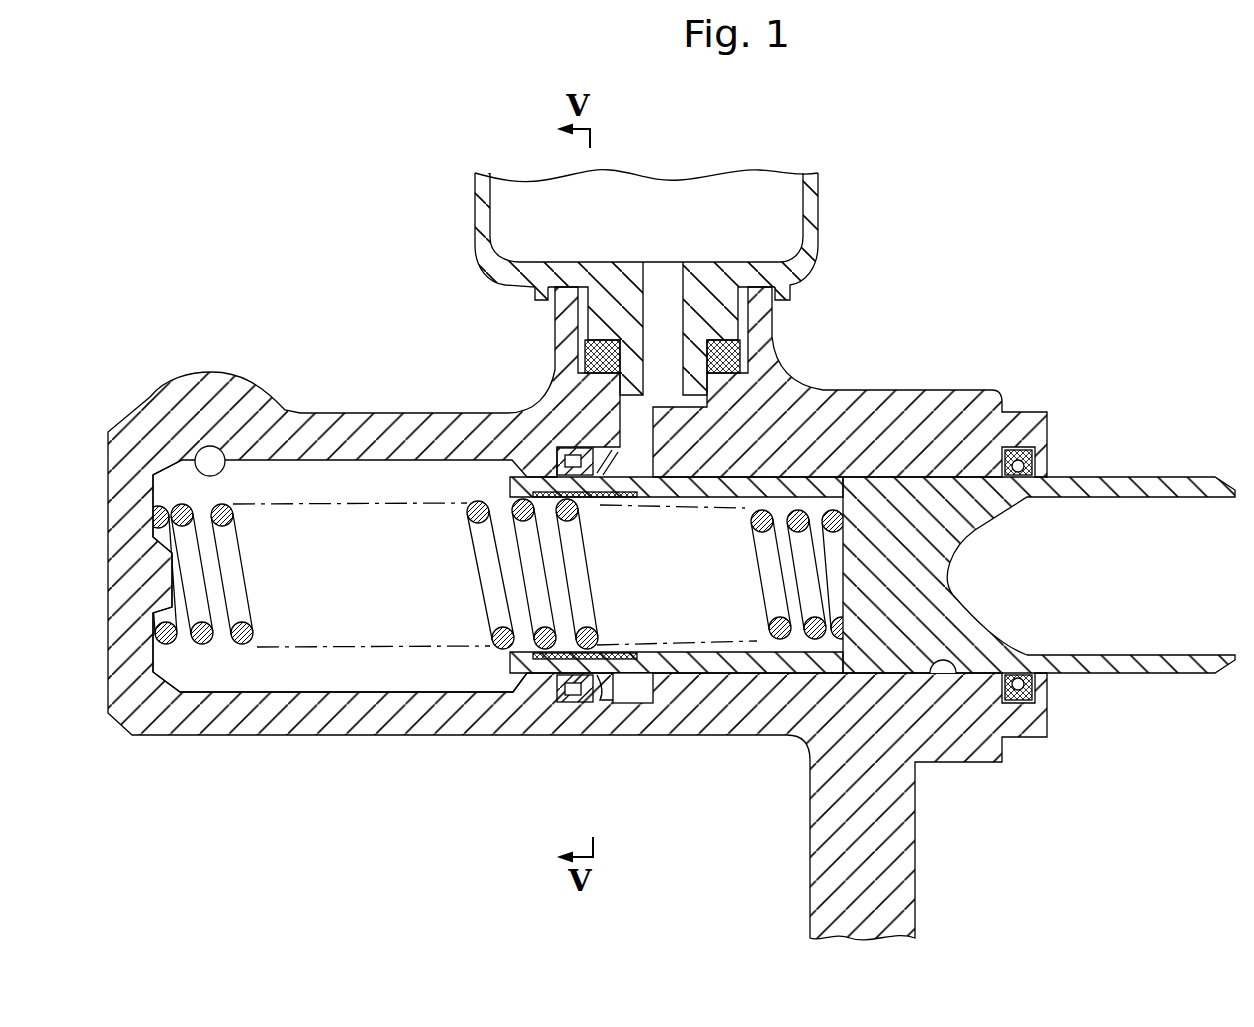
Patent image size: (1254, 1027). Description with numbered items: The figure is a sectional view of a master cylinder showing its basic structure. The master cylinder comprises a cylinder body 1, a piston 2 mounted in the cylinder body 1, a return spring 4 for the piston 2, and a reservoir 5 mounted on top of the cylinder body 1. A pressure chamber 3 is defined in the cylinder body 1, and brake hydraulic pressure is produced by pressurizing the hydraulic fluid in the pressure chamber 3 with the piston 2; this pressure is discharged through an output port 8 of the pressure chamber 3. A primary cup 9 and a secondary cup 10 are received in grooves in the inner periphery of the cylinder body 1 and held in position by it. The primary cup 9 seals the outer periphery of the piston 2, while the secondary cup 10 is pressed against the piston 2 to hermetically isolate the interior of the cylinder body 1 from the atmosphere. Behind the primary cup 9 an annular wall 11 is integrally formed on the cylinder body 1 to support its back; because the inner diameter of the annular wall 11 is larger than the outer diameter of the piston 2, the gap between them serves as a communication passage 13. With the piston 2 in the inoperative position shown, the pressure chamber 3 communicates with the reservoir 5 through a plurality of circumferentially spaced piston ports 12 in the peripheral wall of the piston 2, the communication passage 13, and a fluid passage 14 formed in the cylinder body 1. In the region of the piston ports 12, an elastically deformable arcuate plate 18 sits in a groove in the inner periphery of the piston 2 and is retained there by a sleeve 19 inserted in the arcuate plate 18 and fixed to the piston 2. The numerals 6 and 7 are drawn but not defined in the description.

The cylinder body 1 is at (898, 405).
The piston 2 is at (1142, 484).
The pressure chamber 3 is at (327, 668).
The return spring 4 is at (240, 644).
The reservoir 5 is at (482, 205).
The communication hole 6 is at (931, 675).
The valve body 7 is at (513, 670).
The output port 8 is at (207, 452).
The primary cup 9 is at (575, 704).
The secondary cup 10 is at (1035, 699).
The annular wall 11 is at (601, 692).
The piston ports 12 is at (548, 486).
The communication passage 13 is at (627, 477).
The fluid passage 14 is at (638, 420).
The arcuate plate 18 is at (600, 498).
The sleeve 19 is at (585, 498).